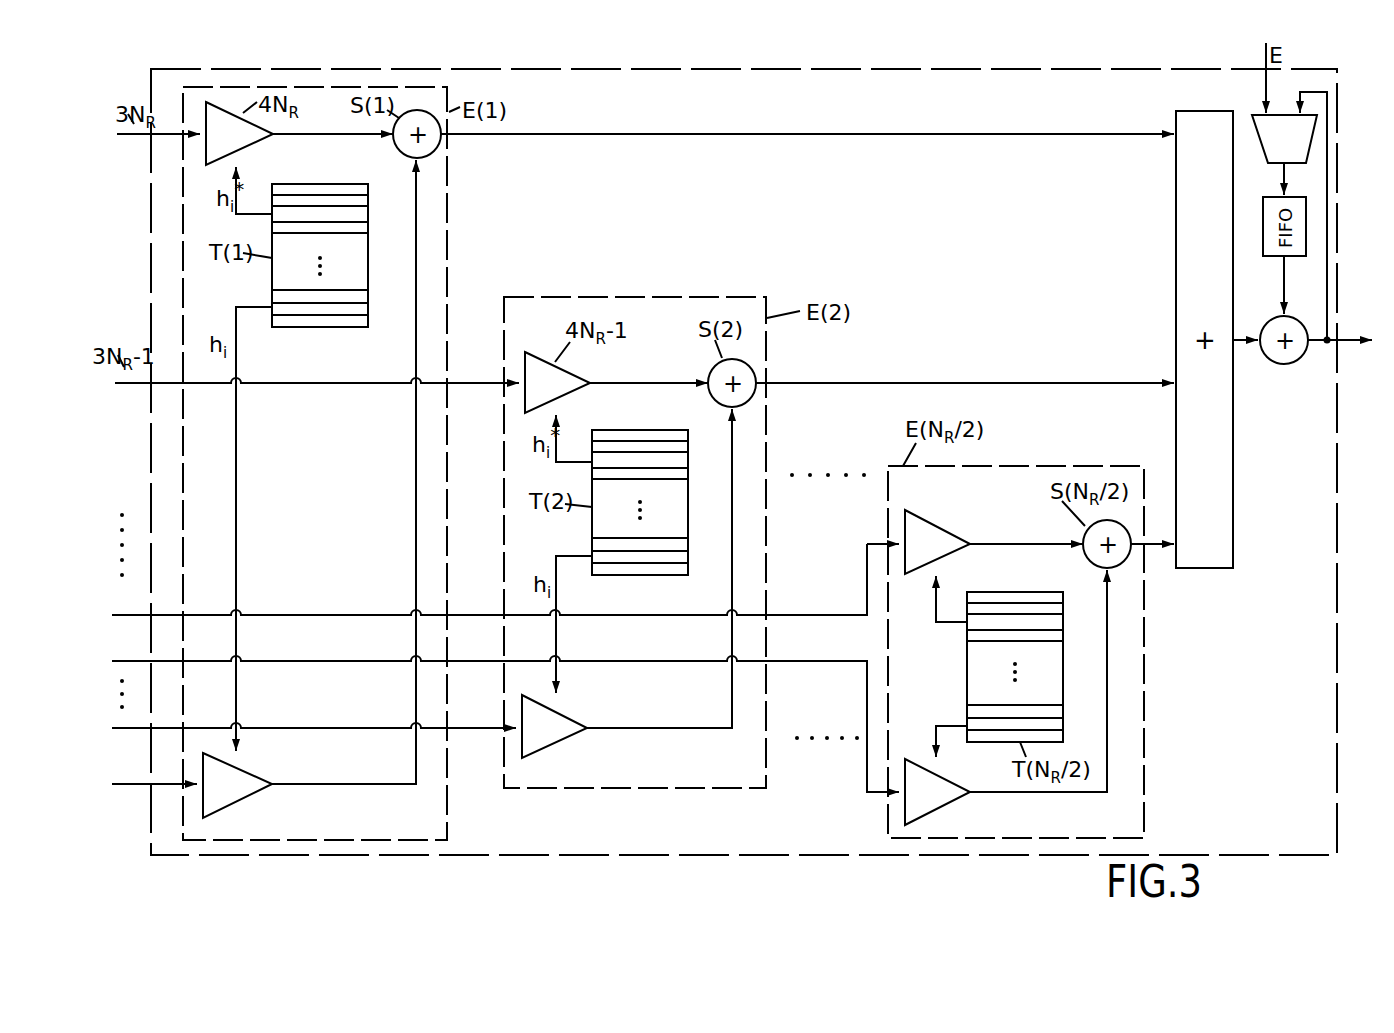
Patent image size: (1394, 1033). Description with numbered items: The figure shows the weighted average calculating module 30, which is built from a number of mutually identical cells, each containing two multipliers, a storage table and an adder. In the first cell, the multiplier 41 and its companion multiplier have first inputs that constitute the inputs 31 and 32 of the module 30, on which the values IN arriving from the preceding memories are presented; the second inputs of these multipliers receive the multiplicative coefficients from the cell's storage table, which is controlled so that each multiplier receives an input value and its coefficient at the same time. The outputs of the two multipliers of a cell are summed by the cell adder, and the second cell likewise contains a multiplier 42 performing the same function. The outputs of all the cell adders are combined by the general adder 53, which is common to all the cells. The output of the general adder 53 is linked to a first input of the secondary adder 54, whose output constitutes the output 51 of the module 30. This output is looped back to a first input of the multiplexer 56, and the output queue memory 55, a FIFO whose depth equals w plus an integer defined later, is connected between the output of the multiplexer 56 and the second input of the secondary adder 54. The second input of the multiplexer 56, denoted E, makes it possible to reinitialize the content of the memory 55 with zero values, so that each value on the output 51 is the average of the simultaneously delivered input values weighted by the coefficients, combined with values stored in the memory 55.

The weighted average calculating module 30 is at (1125, 70).
The input 31 is at (118, 785).
The input 32 is at (128, 729).
The multiplier 41 is at (243, 802).
The multiplier 42 is at (562, 742).
The output 51 is at (1362, 346).
The general adder 53 is at (1233, 562).
The secondary adder 54 is at (1284, 364).
The output queue memory (FIFO) 55 is at (1270, 258).
The multiplexer 56 is at (1310, 138).